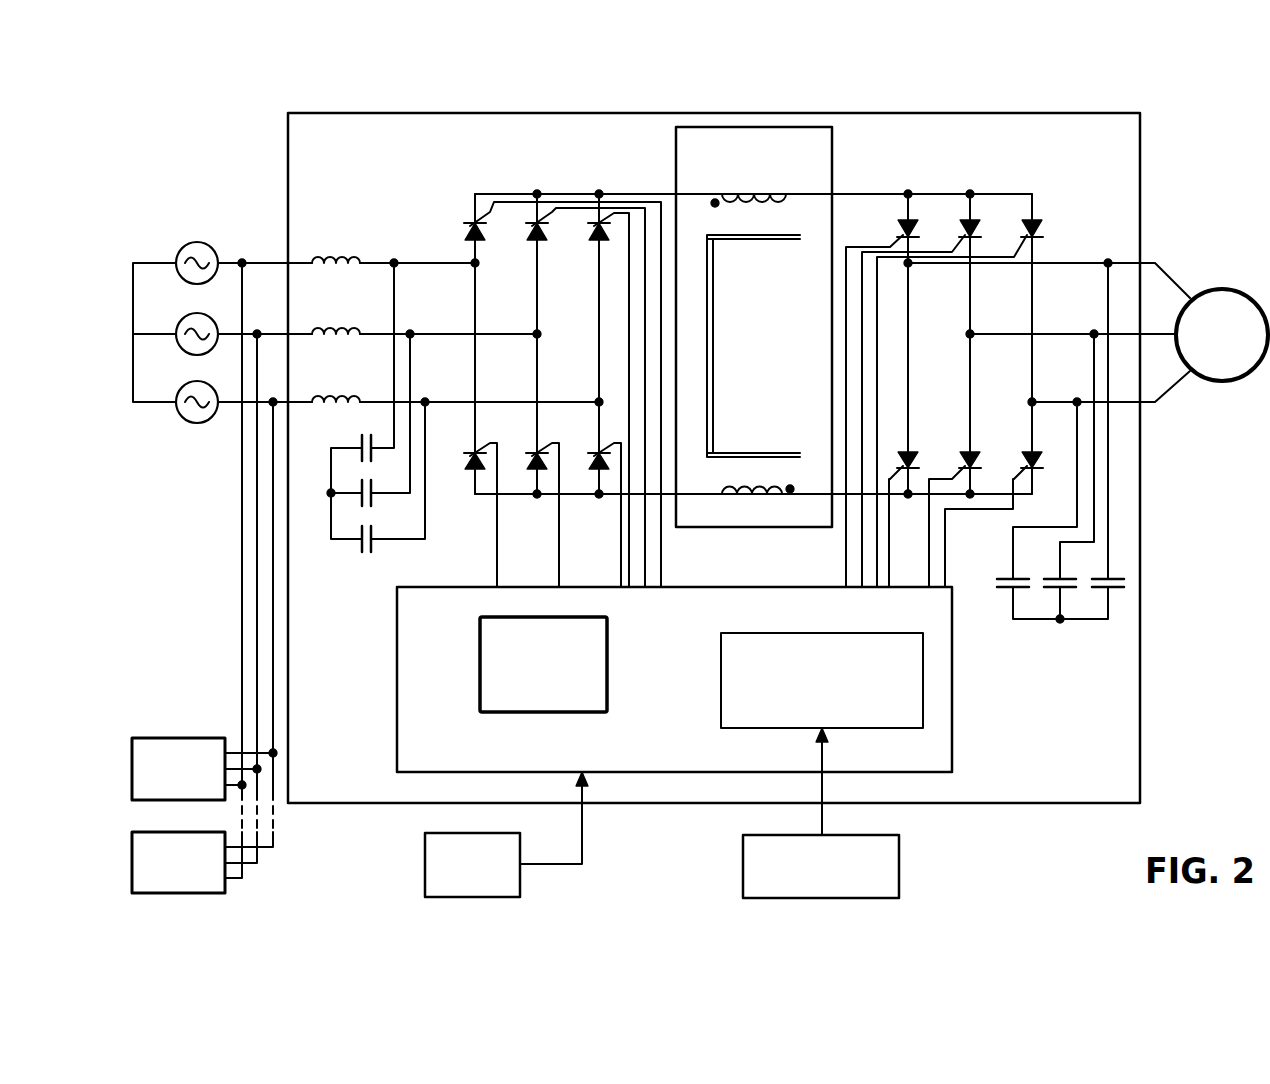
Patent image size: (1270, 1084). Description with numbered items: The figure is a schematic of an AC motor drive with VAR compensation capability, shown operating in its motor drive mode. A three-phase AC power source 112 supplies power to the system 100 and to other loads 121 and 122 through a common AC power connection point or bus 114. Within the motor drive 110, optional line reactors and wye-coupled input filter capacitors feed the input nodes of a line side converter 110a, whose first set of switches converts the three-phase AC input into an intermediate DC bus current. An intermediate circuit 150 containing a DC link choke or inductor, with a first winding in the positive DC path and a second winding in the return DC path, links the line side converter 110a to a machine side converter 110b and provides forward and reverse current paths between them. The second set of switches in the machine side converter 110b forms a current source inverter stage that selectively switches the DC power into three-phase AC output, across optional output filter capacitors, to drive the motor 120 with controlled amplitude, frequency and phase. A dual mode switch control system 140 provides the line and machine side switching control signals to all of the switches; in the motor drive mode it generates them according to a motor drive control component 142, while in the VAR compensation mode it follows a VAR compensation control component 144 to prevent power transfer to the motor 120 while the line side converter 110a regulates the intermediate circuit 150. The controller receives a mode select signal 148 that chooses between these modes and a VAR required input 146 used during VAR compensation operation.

The system 100 is at (180, 122).
The motor drive 110 is at (288, 147).
The line side converter 110a is at (487, 537).
The machine side converter 110b is at (1033, 167).
The AC power source 112 is at (186, 431).
The common AC power connection point or bus 114 is at (233, 548).
The motor 120 is at (1222, 335).
The load 121 is at (204, 769).
The load 122 is at (178, 862).
The switch control system 140 is at (397, 748).
The motor drive control component 142 is at (480, 663).
The VAR compensation control component 144 is at (721, 680).
The VAR required input 146 is at (743, 865).
The mode select signal 148 is at (425, 864).
The intermediate circuit 150 is at (676, 152).